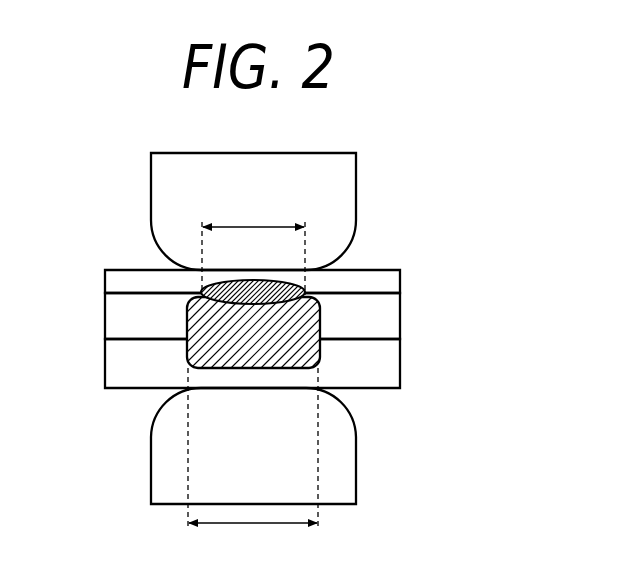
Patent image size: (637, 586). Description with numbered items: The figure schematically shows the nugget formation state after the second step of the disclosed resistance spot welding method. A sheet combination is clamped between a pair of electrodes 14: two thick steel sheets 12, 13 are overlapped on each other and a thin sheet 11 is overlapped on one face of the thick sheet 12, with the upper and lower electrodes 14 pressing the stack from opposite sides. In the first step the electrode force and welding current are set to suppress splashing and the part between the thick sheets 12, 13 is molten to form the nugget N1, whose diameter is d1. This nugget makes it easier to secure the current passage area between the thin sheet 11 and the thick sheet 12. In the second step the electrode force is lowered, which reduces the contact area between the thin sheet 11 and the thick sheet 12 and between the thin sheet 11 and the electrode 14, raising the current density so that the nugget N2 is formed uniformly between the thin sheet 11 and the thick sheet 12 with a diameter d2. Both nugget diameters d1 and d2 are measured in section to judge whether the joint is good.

The thin sheet 11 is at (395, 280).
The thick sheet 12 is at (395, 318).
The thick sheet 13 is at (395, 368).
The electrode 14 is at (343, 174).
The nugget N1 is at (200, 324).
The nugget N2 is at (301, 289).
The nugget diameter d1 is at (253, 461).
The nugget diameter d2 is at (253, 246).